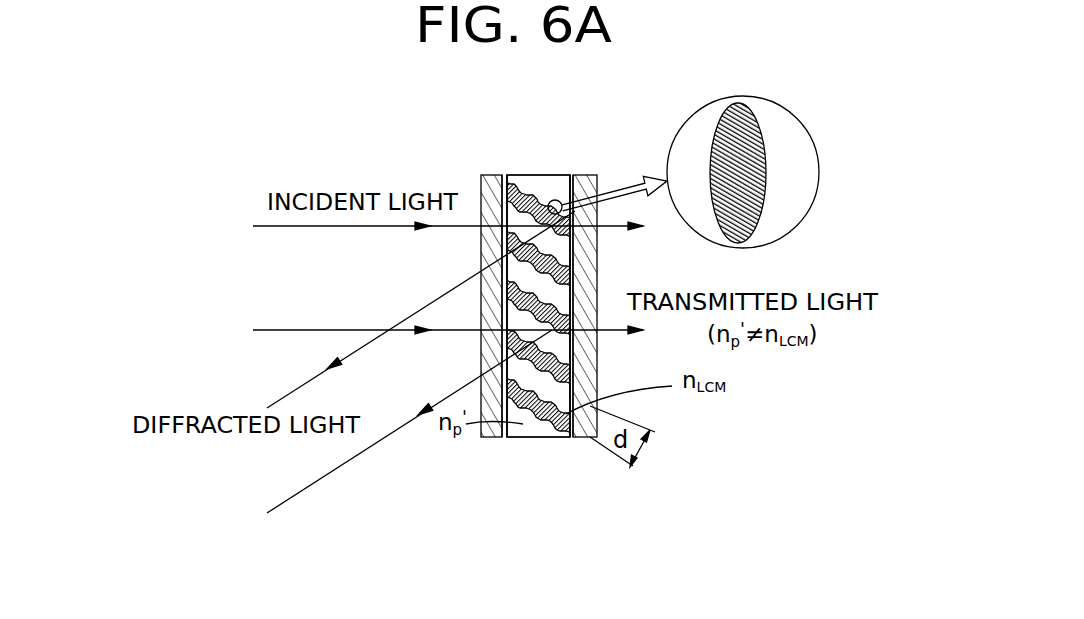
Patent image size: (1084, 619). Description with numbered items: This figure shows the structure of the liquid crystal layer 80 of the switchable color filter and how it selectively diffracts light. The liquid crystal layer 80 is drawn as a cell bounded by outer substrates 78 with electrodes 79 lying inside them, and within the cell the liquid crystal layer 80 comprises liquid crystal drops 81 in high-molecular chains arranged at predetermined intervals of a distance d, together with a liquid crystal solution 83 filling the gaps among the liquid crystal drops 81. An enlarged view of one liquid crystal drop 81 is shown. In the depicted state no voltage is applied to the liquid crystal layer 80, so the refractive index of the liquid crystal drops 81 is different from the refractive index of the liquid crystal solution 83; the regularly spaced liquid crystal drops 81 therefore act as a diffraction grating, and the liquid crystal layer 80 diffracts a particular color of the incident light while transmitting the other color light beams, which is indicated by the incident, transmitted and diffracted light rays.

The substrate 78 is at (491, 438).
The electrode 79 is at (506, 438).
The liquid crystal layer 80 is at (513, 127).
The liquid crystal drops 81 is at (518, 184).
The liquid crystal solution 83 is at (555, 182).